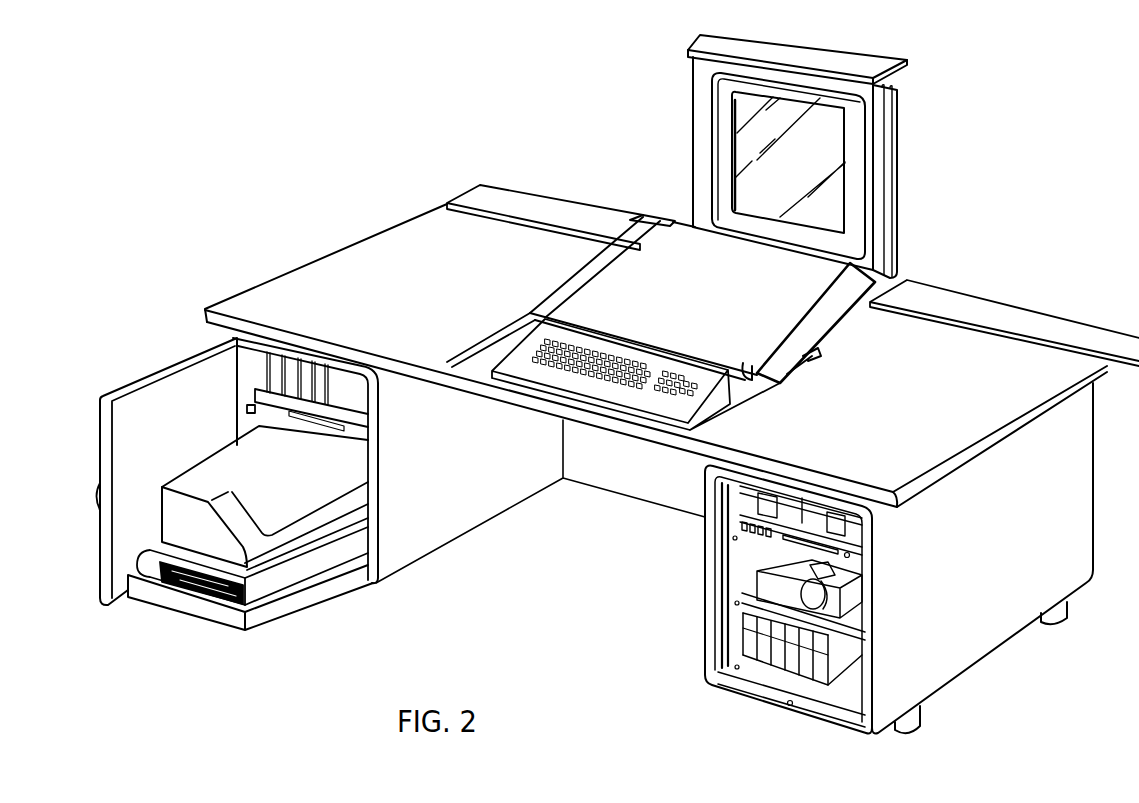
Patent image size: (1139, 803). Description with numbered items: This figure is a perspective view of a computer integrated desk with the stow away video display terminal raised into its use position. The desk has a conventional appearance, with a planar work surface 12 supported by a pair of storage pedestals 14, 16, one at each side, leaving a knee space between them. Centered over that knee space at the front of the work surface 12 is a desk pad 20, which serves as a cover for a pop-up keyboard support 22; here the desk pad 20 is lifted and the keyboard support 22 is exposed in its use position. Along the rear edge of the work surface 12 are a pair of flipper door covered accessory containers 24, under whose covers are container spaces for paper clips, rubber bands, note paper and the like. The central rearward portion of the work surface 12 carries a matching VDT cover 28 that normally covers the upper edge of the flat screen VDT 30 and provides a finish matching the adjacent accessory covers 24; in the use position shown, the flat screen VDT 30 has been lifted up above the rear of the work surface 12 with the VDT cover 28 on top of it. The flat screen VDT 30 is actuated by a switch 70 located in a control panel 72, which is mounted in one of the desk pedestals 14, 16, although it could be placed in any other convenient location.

The work surface 12 is at (997, 420).
The storage pedestal 14 is at (1077, 507).
The storage pedestal 16 is at (452, 528).
The desk pad 20 is at (783, 323).
The keyboard support 22 is at (490, 364).
The flipper door covered accessory container 24 is at (553, 199).
The VDT cover 28 is at (861, 59).
The flat screen VDT 30 is at (871, 173).
The switch 70 is at (740, 525).
The control panel 72 is at (778, 536).